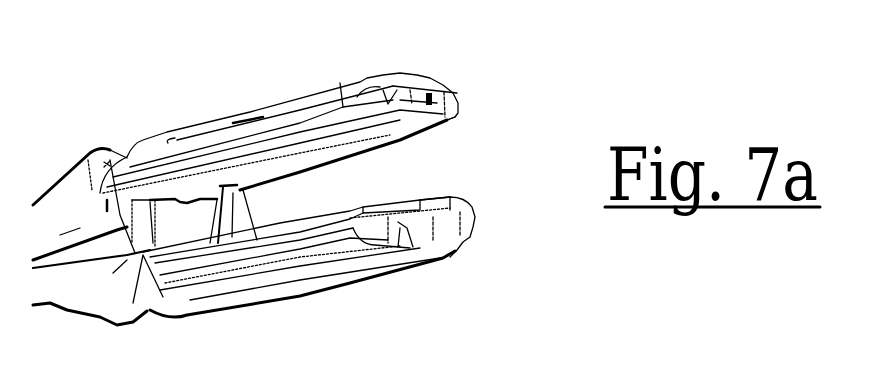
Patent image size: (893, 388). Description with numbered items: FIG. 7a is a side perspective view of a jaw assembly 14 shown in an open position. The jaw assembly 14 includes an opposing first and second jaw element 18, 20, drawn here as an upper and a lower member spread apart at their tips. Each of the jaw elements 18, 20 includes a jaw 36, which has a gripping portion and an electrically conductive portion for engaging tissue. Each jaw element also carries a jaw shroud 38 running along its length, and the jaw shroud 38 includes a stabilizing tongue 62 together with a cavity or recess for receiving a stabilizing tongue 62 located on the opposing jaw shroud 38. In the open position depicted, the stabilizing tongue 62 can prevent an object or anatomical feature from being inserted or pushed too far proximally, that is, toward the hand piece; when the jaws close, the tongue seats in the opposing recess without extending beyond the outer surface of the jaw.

The jaw assembly 14 is at (134, 60).
The first jaw element 18 is at (466, 91).
The second jaw element 20 is at (464, 258).
The jaw 36 is at (443, 126).
The jaw shroud 38 is at (294, 104).
The stabilizing tongue 62 is at (143, 229).